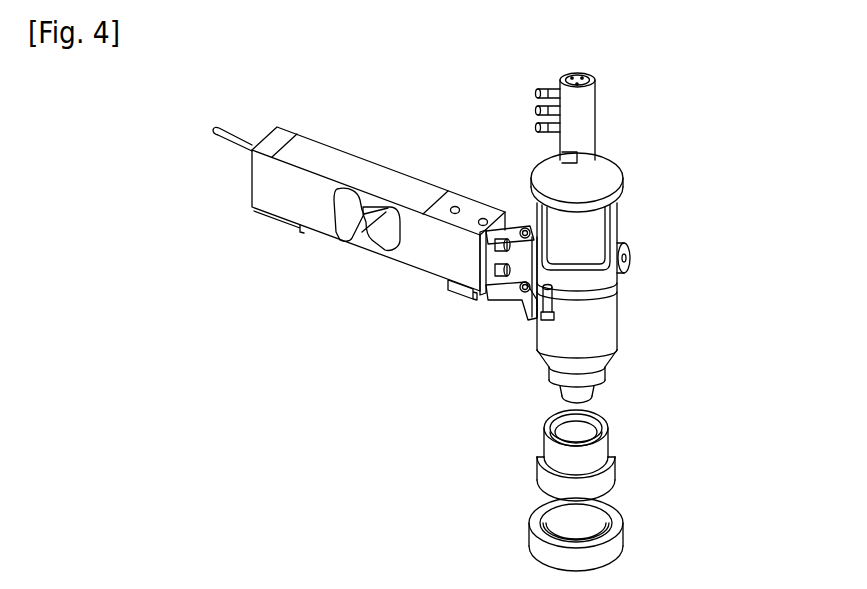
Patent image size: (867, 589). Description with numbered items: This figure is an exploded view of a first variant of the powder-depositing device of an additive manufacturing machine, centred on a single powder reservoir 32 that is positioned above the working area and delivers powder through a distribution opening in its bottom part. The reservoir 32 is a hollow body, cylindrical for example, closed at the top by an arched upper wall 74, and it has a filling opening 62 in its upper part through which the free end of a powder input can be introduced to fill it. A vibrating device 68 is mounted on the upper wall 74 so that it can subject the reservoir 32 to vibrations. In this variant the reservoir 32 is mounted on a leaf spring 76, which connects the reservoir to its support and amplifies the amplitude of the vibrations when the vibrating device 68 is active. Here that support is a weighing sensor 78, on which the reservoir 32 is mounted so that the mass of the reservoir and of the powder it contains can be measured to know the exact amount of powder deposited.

The powder reservoir 32 is at (645, 128).
The filling opening 62 is at (585, 232).
The vibrating device 68 is at (583, 102).
The arched upper wall 74 is at (612, 180).
The leaf spring 76 is at (505, 292).
The weighing sensor 78 is at (410, 253).